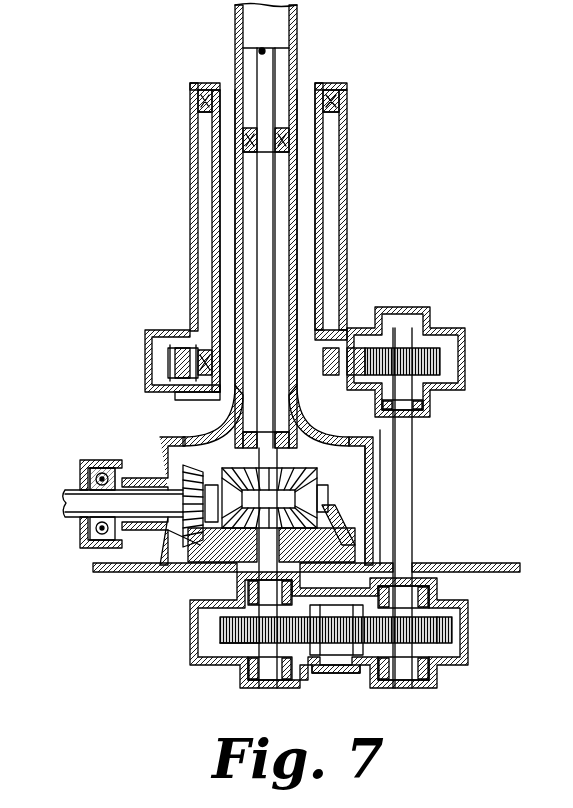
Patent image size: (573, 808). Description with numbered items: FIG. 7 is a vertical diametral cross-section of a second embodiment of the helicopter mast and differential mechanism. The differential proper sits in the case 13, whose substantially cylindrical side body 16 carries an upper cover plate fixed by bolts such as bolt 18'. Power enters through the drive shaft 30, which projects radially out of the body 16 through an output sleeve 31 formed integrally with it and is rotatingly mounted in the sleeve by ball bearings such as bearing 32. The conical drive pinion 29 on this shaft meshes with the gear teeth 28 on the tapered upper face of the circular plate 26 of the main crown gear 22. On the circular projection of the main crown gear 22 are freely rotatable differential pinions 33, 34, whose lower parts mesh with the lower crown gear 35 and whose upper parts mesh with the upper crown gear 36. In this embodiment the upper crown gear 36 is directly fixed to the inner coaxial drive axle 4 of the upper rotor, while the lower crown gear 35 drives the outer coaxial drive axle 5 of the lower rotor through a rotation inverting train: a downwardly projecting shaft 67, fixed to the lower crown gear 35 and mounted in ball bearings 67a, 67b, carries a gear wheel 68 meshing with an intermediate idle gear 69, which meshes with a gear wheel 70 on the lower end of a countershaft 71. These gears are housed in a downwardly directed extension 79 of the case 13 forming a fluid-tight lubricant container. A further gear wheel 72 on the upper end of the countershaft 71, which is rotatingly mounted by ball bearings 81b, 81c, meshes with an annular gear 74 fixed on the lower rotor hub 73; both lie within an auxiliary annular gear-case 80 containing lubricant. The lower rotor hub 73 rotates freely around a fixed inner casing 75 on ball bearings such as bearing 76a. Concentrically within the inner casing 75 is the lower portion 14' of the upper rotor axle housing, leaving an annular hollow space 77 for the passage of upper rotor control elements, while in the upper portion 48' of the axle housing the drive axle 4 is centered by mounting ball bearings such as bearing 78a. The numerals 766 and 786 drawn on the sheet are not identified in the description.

The inner coaxial drive axle 4 is at (262, 252).
The outer coaxial drive axle 5 is at (192, 176).
The case 13 is at (143, 553).
The lower portion of the upper rotor drive axle housing 14' is at (226, 241).
The cylindrical side body 16 is at (373, 505).
The bolt 18' is at (240, 498).
The main crown gear 22 is at (245, 612).
The circular plate 26 is at (350, 550).
The gear teeth 28 is at (345, 532).
The conical drive pinion 29 is at (190, 562).
The drive shaft 30 is at (72, 500).
The output sleeve 31 is at (160, 478).
The ball bearing 32 is at (85, 528).
The pinion 33 is at (258, 565).
The pinion 34 is at (405, 465).
The lower crown gear 35 is at (292, 470).
The upper crown gear 36 is at (235, 470).
The upper portion of the axle housing 48' is at (228, 57).
The downwardly projecting shaft 67 is at (225, 640).
The ball bearing 67a is at (300, 660).
The ball bearing 67b is at (240, 658).
The gear wheel 68 is at (258, 680).
The intermediate idle gear 69 is at (322, 675).
The gear wheel 70 is at (455, 628).
The countershaft 71 is at (405, 480).
The gear wheel 72 is at (428, 348).
The lower rotor hub 73 is at (193, 294).
The annular gear 74 is at (170, 358).
The fixed inner casing 75 is at (215, 248).
The ball bearing 76a is at (350, 350).
The seal 766 is at (200, 105).
The annular hollow space 77 is at (215, 195).
The mounting ball bearing 78a is at (230, 428).
The seal 786 is at (248, 135).
The downwardly directed extension 79 is at (357, 687).
The auxiliary annular gear-case 80 is at (477, 360).
The ball bearing 81b is at (436, 592).
The ball bearing 81c is at (438, 412).